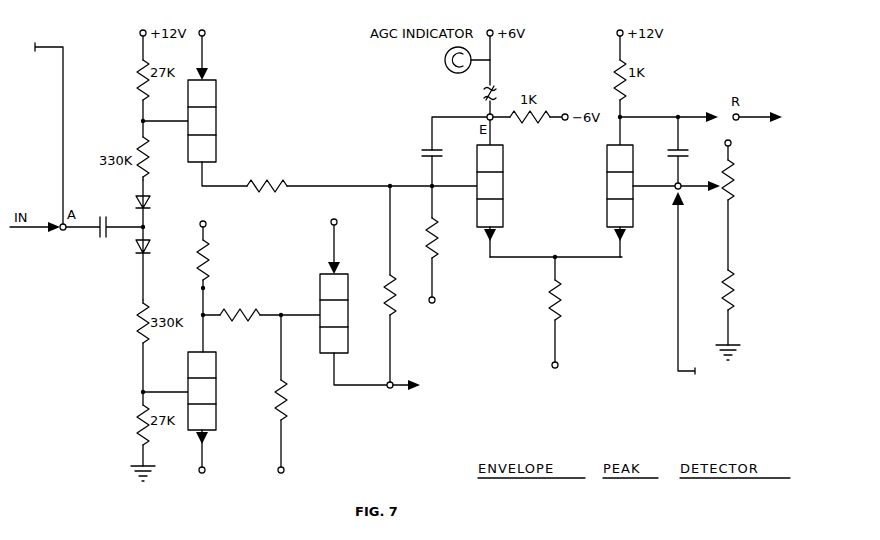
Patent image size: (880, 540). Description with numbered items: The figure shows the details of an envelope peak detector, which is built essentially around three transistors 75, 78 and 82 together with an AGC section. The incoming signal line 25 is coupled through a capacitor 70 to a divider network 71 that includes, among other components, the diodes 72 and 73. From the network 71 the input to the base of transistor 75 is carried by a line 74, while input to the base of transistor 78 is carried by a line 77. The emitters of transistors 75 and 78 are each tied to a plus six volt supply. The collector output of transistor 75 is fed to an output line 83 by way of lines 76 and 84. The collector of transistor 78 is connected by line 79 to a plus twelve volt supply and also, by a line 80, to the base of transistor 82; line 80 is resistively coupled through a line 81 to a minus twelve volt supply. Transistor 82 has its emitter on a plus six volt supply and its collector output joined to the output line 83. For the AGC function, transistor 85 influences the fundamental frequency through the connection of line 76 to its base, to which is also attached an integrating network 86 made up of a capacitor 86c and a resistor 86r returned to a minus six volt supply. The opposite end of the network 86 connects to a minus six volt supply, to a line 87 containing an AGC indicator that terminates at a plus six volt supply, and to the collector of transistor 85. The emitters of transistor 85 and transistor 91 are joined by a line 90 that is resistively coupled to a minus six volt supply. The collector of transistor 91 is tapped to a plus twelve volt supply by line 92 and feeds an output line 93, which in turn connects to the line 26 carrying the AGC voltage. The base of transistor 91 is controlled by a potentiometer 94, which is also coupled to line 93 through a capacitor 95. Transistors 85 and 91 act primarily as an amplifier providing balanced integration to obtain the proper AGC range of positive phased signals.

The incoming signal line 25 is at (78, 228).
The line 26 is at (757, 118).
The capacitor 70 is at (102, 242).
The divider network 71 is at (140, 122).
The diode 72 is at (150, 208).
The diode 73 is at (140, 250).
The line 74 is at (160, 119).
The transistor 75 is at (216, 121).
The line 76 is at (345, 186).
The line 77 is at (176, 390).
The transistor 78 is at (216, 385).
The line 79 is at (200, 289).
The line 80 is at (268, 318).
The line 81 is at (283, 358).
The transistor 82 is at (349, 316).
The output line 83 is at (364, 388).
The line 84 is at (392, 233).
The transistor 85 is at (503, 167).
The integrating network 86 is at (467, 118).
The capacitor 86c is at (425, 150).
The resistor 86r is at (440, 260).
The line 87 is at (494, 104).
The line 90 is at (527, 259).
The transistor 91 is at (606, 160).
The line 92 is at (626, 133).
The output line 93 is at (707, 118).
The potentiometer 94 is at (714, 212).
The capacitor 95 is at (685, 149).